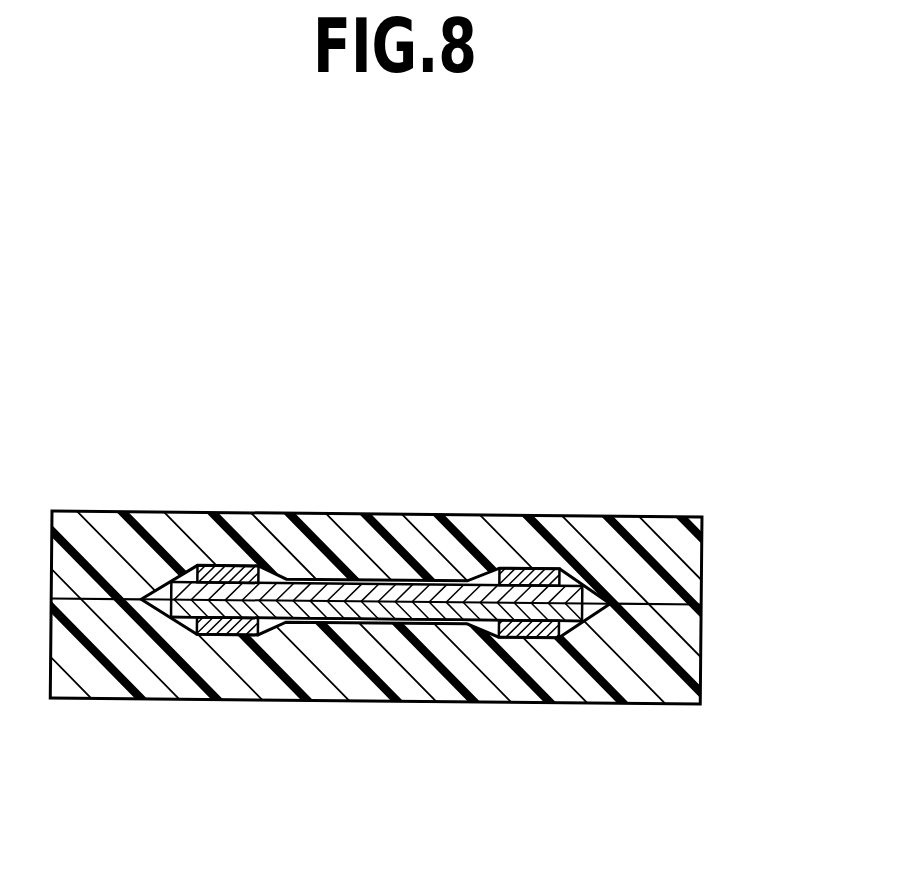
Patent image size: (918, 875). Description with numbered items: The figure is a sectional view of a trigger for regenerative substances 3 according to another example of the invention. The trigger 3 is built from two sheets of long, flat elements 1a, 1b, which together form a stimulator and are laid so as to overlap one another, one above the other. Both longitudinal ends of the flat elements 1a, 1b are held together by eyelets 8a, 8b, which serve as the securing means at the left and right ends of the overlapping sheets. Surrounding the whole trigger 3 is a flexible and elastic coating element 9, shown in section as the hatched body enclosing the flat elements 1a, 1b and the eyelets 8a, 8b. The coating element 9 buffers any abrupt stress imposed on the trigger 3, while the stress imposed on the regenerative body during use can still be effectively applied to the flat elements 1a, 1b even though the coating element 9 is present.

The trigger for regenerative substances 3 is at (675, 466).
The coating element 9 is at (323, 686).
The eyelet 8a is at (216, 572).
The eyelet 8b is at (533, 577).
The flat element 1a is at (383, 586).
The flat element 1b is at (405, 620).